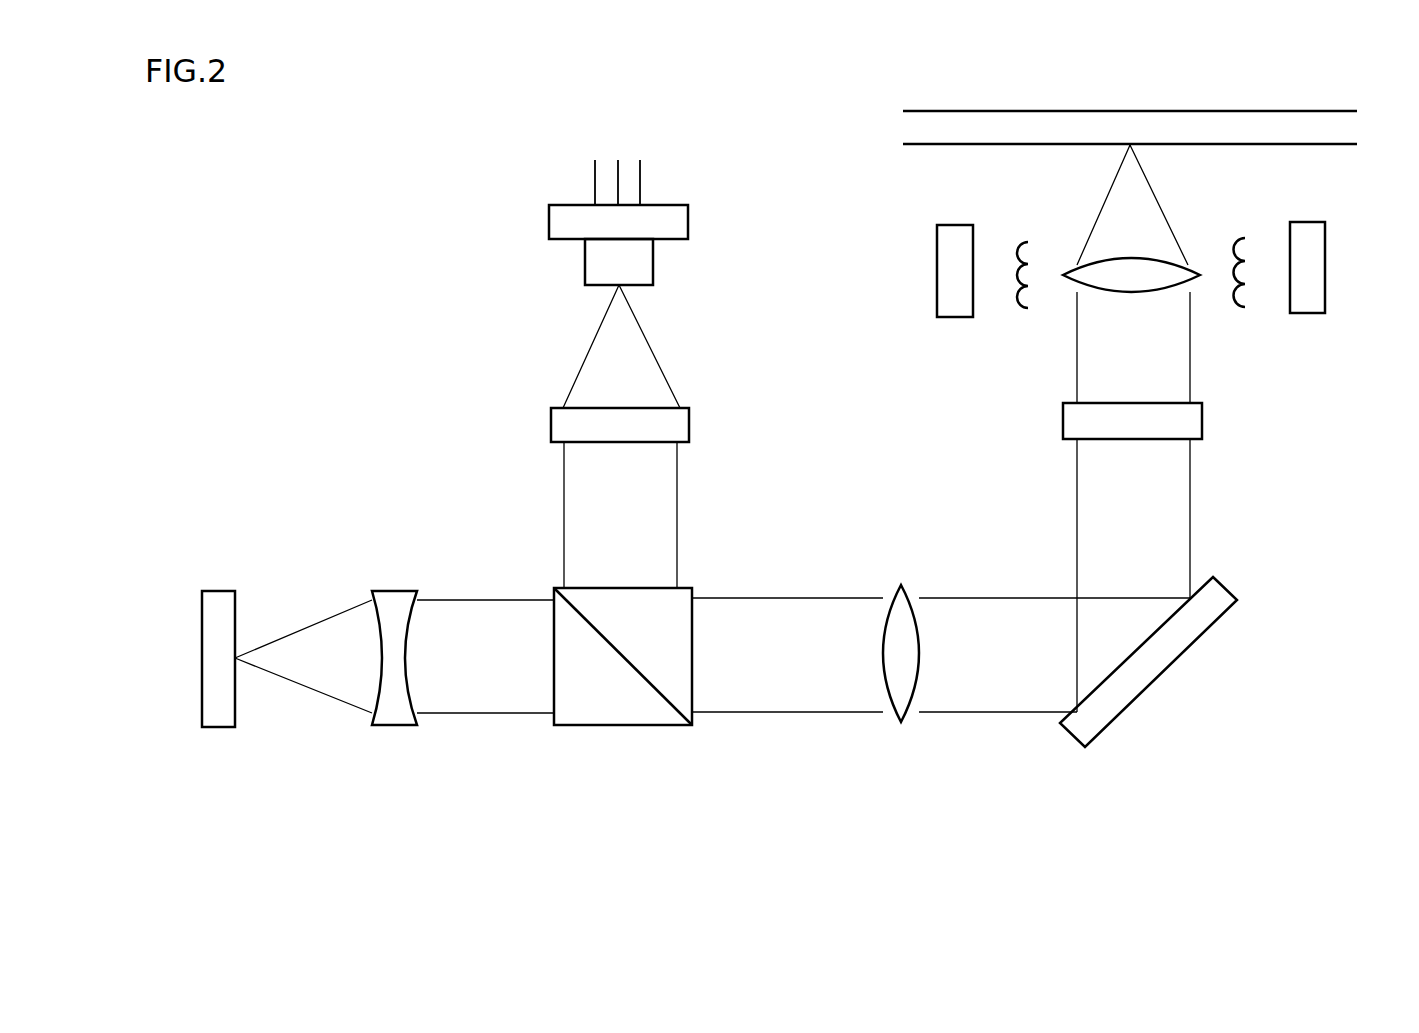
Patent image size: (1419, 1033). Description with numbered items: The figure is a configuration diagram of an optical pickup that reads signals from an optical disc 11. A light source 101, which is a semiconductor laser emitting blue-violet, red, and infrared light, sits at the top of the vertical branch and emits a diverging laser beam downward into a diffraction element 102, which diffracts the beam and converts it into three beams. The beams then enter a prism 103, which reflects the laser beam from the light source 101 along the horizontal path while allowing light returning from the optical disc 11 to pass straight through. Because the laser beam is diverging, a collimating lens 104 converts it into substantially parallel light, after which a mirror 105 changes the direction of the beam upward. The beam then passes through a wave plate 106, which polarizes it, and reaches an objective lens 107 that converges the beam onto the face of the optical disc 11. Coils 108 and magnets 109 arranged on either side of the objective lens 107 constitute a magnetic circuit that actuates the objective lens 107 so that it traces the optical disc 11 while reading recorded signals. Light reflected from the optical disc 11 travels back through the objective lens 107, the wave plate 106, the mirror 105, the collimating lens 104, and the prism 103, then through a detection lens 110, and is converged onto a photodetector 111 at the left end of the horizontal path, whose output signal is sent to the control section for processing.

The optical disc 11 is at (1323, 122).
The light source 101 is at (675, 217).
The diffraction element 102 is at (678, 420).
The prism 103 is at (620, 713).
The collimating lens 104 is at (905, 687).
The mirror 105 is at (1143, 695).
The wave plate 106 is at (1188, 425).
The objective lens 107 is at (1120, 280).
The coils 108 is at (1020, 303).
The magnets 109 is at (948, 293).
The detection lens 110 is at (395, 715).
The photodetector 111 is at (222, 715).